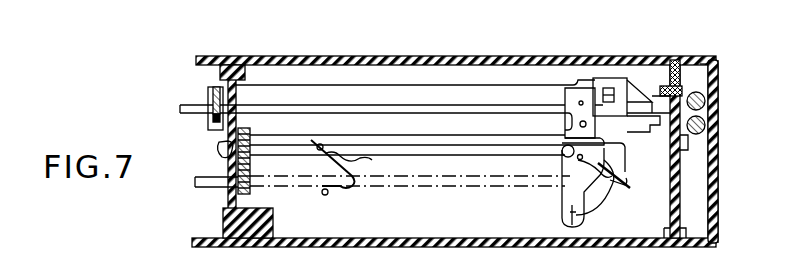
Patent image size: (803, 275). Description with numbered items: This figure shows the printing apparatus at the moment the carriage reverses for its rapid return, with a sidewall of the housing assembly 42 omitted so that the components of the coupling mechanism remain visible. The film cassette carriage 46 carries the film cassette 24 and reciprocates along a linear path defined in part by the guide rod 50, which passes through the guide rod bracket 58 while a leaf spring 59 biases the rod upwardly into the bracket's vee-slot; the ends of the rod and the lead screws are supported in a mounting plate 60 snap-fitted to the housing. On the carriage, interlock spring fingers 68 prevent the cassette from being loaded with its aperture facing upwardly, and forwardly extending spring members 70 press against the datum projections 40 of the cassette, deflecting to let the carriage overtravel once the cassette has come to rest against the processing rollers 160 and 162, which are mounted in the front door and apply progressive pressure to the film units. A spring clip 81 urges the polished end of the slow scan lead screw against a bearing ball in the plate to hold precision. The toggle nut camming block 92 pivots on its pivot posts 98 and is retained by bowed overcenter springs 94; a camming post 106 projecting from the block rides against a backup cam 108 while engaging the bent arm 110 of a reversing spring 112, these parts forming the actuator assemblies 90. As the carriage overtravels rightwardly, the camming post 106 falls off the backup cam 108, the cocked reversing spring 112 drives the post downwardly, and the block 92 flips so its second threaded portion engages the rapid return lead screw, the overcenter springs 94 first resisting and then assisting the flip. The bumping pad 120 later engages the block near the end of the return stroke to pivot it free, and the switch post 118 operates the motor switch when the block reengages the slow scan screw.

The housing assembly 42 is at (325, 54).
The film cassette carriage 46 is at (412, 82).
The guide rod 50 is at (328, 108).
The guide rod bracket 58 is at (210, 93).
The leaf spring 59 is at (213, 118).
The mounting plate 60 is at (681, 200).
The interlock spring finger 68 is at (573, 88).
The spring member 70 is at (637, 88).
The switch post 118 is at (566, 118).
The reversing spring 112 is at (344, 194).
The film cassette 24 is at (682, 78).
The datum projection 40 is at (708, 86).
The film processing roller 160 is at (706, 101).
The film processing roller 162 is at (706, 126).
The spring clip 81 is at (690, 140).
The bumping pad 120 is at (283, 222).
The actuator assembly 90 is at (318, 198).
The bent arm 110 is at (312, 162).
The backup cam 108 is at (368, 162).
The pivot post 98 is at (563, 152).
The toggle nut camming block 92 is at (562, 196).
The bowed overcenter spring 94 is at (586, 219).
The camming post 106 is at (628, 187).